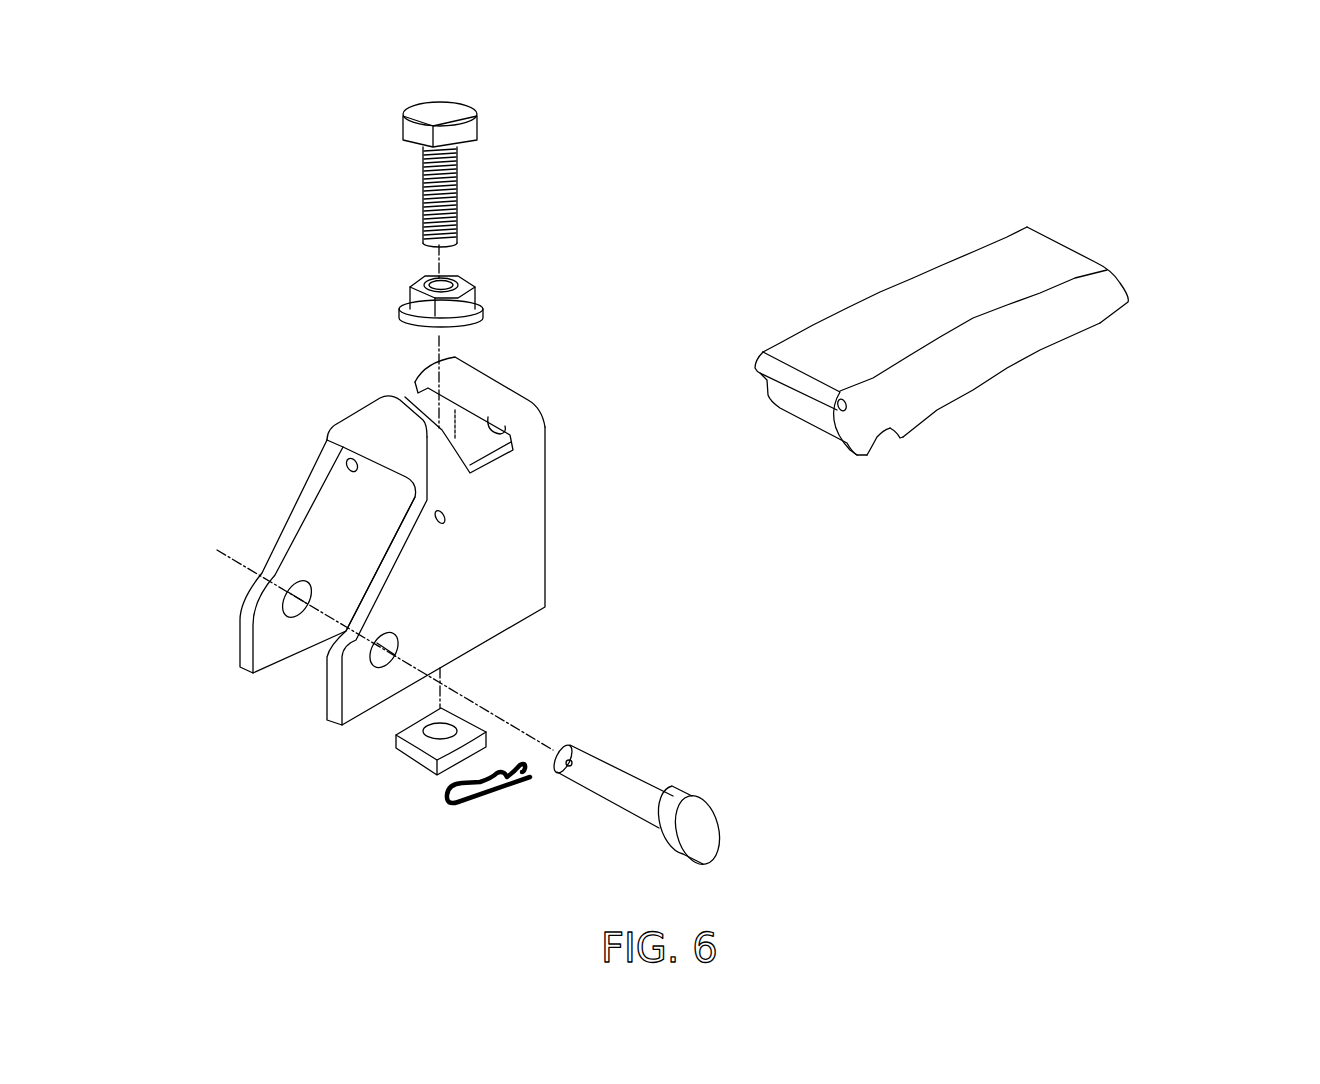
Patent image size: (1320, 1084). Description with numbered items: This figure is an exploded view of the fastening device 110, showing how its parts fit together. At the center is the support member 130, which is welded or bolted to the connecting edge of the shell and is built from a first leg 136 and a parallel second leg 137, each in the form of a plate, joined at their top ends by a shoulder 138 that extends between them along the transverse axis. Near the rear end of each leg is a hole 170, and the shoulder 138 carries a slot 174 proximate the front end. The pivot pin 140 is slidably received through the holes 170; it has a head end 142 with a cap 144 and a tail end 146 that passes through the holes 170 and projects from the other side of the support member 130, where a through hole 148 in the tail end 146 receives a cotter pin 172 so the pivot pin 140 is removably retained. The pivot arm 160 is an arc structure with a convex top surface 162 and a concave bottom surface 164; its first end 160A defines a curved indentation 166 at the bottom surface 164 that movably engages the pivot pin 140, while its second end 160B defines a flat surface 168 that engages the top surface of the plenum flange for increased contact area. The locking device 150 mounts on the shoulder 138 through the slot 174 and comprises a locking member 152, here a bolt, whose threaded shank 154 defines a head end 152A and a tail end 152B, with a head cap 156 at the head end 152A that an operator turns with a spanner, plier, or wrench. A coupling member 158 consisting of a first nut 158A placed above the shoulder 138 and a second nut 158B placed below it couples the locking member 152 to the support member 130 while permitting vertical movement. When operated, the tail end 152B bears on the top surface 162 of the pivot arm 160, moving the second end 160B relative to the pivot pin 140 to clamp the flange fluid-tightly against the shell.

The fastening device 110 is at (832, 80).
The support member 130 is at (560, 383).
The first leg 136 is at (330, 723).
The second leg 137 is at (242, 673).
The shoulder 138 is at (490, 386).
The pivot pin 140 is at (697, 722).
The head end 142 is at (733, 792).
The cap 144 is at (663, 840).
The tail end 146 is at (565, 735).
The through hole 148 is at (574, 756).
The locking device 150 is at (541, 175).
The locking member 152 is at (404, 207).
The head end 152A is at (400, 86).
The tail end 152B is at (418, 249).
The shank 154 is at (427, 190).
The head cap 156 is at (478, 127).
The coupling member 158 is at (466, 543).
The first nut 158A is at (480, 297).
The second nut 158B is at (417, 751).
The pivot arm 160 is at (1034, 186).
The first end 160A is at (783, 449).
The second end 160B is at (1148, 291).
The top surface 162 is at (937, 272).
The bottom surface 164 is at (905, 437).
The curved indentation 166 is at (875, 440).
The flat surface 168 is at (1100, 323).
The hole 170 is at (290, 604).
The cotter pin 172 is at (467, 810).
The slot 174 is at (492, 430).